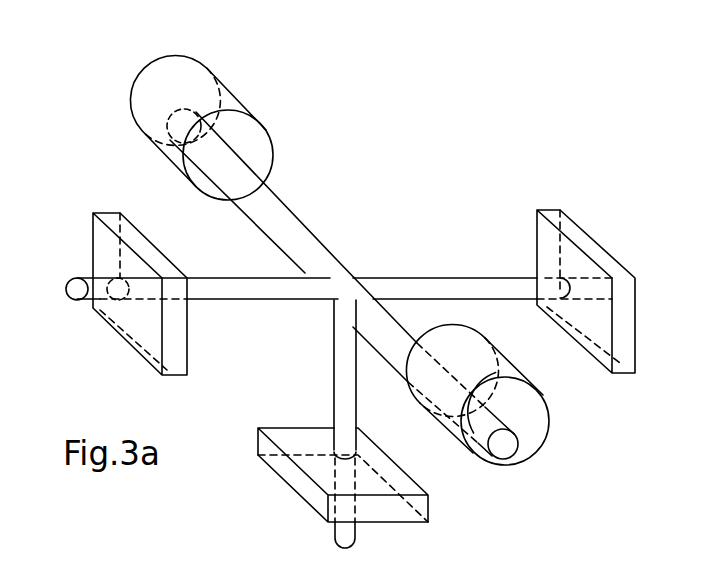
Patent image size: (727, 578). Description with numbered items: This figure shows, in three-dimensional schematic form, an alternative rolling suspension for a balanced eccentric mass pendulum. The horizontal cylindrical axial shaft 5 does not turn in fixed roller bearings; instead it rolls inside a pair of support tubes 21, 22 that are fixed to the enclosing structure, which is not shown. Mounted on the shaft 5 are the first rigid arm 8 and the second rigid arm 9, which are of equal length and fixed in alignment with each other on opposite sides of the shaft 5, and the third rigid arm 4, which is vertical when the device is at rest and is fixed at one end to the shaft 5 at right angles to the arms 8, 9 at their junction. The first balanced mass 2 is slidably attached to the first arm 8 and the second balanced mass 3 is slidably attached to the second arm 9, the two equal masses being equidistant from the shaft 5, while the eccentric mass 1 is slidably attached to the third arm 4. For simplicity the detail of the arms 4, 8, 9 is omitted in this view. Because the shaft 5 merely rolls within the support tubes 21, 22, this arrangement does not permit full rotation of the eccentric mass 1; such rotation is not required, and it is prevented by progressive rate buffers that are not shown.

The eccentric mass 1 is at (280, 467).
The first balanced mass 2 is at (92, 233).
The second balanced mass 3 is at (635, 317).
The third rigid arm 4 is at (332, 367).
The horizontal axial shaft 5 is at (282, 208).
The first rigid arm 8 is at (263, 300).
The second rigid arm 9 is at (440, 277).
The support tube 21 is at (549, 421).
The support tube 22 is at (273, 147).